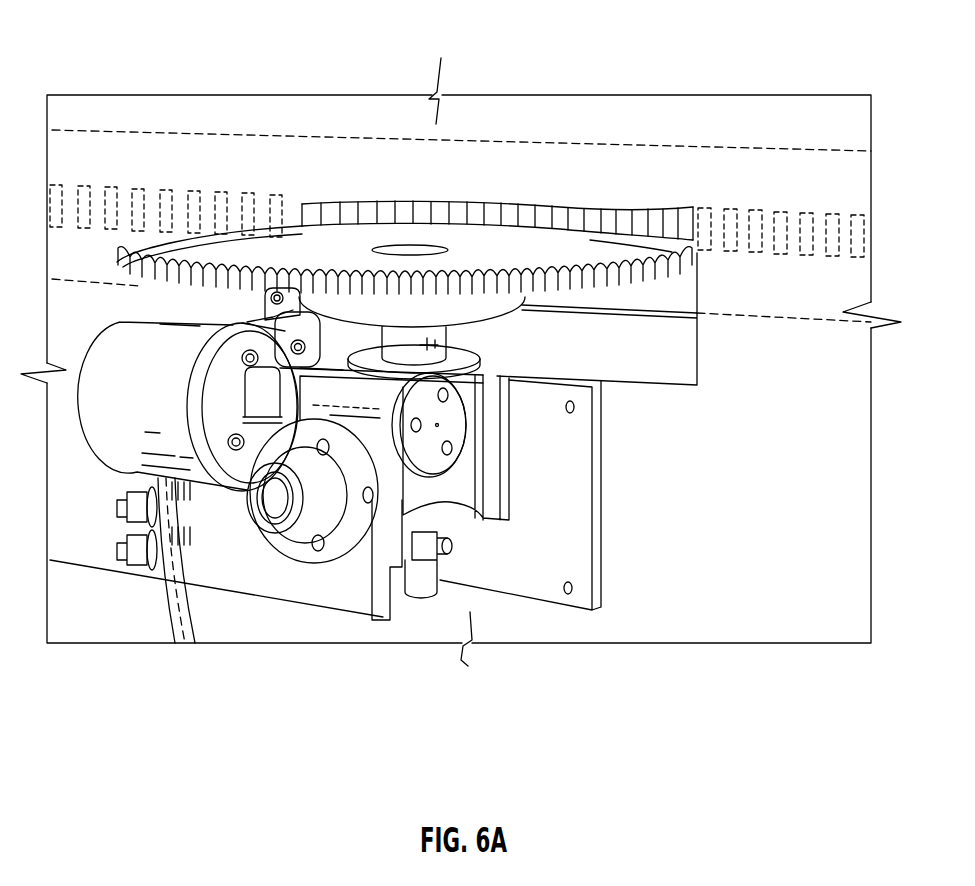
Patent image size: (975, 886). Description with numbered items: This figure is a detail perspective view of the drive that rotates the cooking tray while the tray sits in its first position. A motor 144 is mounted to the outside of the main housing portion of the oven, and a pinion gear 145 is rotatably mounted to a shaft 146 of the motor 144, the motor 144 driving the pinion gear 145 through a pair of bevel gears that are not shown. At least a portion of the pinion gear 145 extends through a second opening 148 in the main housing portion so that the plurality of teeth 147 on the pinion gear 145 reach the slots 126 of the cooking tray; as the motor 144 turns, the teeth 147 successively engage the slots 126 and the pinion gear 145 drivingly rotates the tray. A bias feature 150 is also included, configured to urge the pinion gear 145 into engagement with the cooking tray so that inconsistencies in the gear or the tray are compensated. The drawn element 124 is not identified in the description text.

The housing wall 124 is at (725, 177).
The slots 126 is at (657, 218).
The motor 144 is at (117, 412).
The pinion gear 145 is at (285, 250).
The shaft 146 is at (603, 400).
The teeth 147 is at (118, 267).
The second opening 148 is at (422, 203).
The bias feature 150 is at (160, 597).